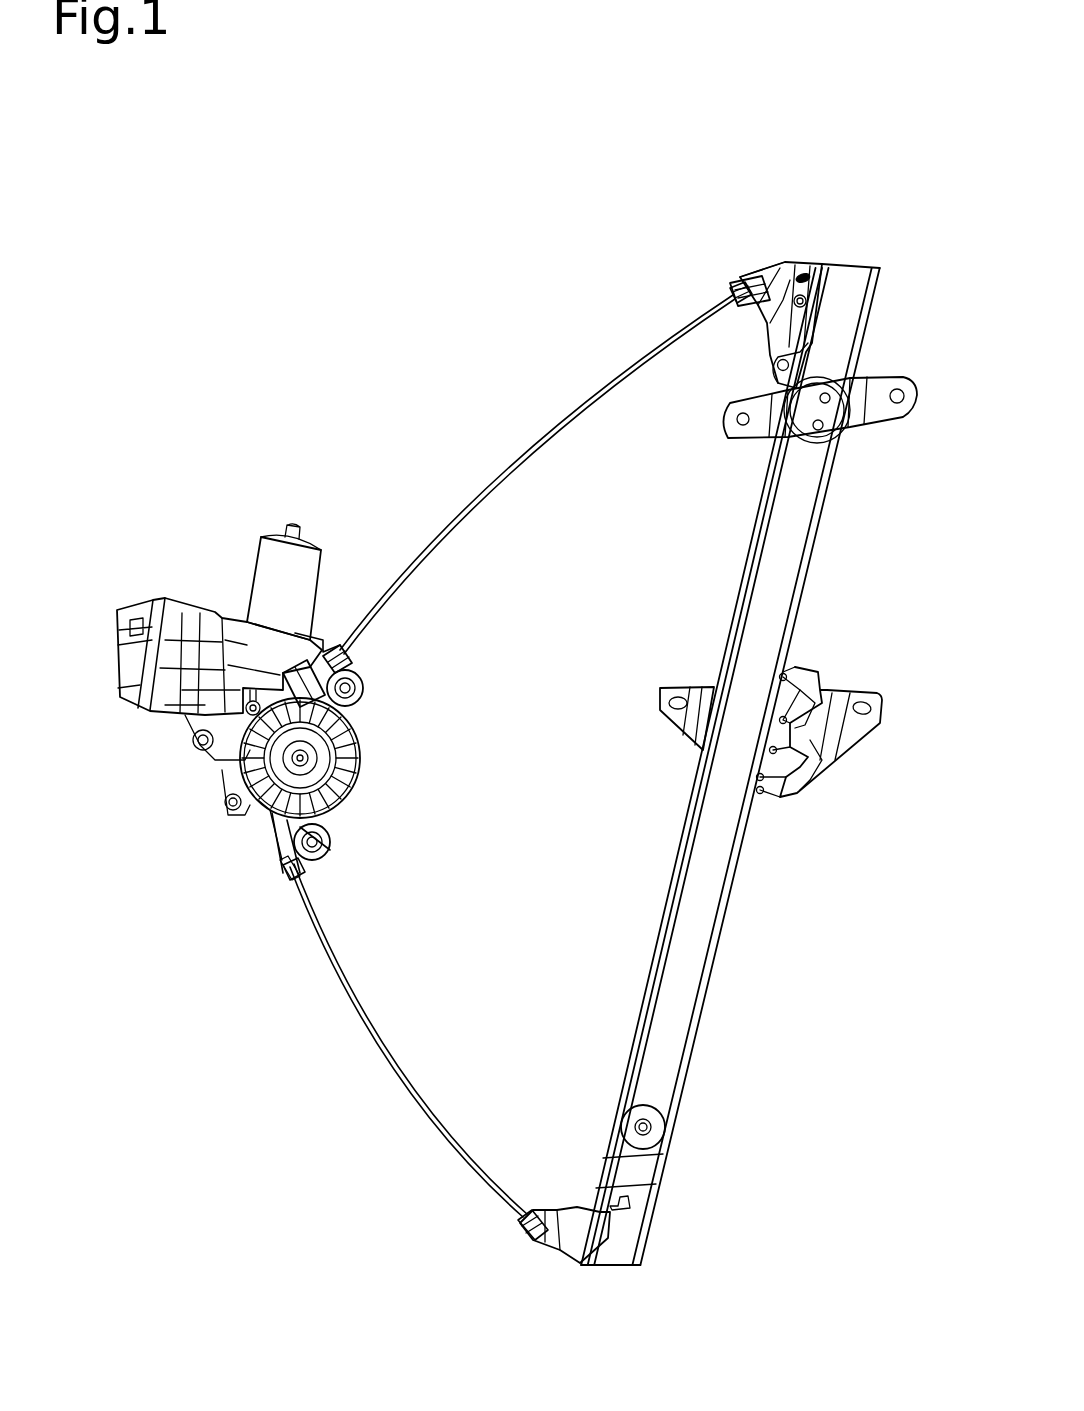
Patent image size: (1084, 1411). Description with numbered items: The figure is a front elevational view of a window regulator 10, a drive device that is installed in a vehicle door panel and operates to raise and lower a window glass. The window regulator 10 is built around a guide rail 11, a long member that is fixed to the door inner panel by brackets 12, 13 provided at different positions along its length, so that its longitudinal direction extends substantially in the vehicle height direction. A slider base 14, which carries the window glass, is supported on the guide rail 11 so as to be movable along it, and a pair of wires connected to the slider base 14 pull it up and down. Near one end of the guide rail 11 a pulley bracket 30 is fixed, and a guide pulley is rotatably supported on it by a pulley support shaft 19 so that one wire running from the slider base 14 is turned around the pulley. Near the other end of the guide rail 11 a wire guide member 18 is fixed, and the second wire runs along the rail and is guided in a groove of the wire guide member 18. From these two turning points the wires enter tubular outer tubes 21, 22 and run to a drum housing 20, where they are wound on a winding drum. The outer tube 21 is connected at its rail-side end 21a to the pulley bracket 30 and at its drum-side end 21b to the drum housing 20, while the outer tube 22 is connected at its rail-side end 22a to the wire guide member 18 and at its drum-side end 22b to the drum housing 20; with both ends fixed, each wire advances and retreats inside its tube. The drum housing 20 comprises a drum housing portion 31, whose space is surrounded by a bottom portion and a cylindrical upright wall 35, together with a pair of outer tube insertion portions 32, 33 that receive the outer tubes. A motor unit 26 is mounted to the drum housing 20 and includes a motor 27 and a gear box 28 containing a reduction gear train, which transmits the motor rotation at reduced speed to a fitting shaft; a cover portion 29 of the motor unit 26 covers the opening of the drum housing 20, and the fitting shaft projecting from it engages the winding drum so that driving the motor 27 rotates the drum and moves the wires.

The window regulator 10 is at (392, 352).
The guide rail 11 is at (775, 580).
The bracket 12 is at (875, 385).
The bracket 13 is at (660, 1128).
The slider base 14 is at (808, 745).
The wire guide member 18 is at (565, 1235).
The pulley support shaft 19 is at (808, 300).
The drum housing 20 is at (336, 845).
The outer tube 21 is at (512, 467).
The rail-side end 21a is at (735, 296).
The drum-side end 21b is at (345, 648).
The outer tube 22 is at (388, 1070).
The rail-side end 22a is at (527, 1215).
The drum-side end 22b is at (305, 882).
The motor unit 26 is at (219, 657).
The motor 27 is at (262, 585).
The gear box 28 is at (185, 720).
The cover portion 29 is at (362, 755).
The pulley bracket 30 is at (792, 262).
The drum housing portion 31 is at (373, 753).
The cylindrical upright wall 35 is at (270, 830).
The outer tube insertion portion 32 is at (360, 668).
The outer tube insertion portion 33 is at (288, 868).